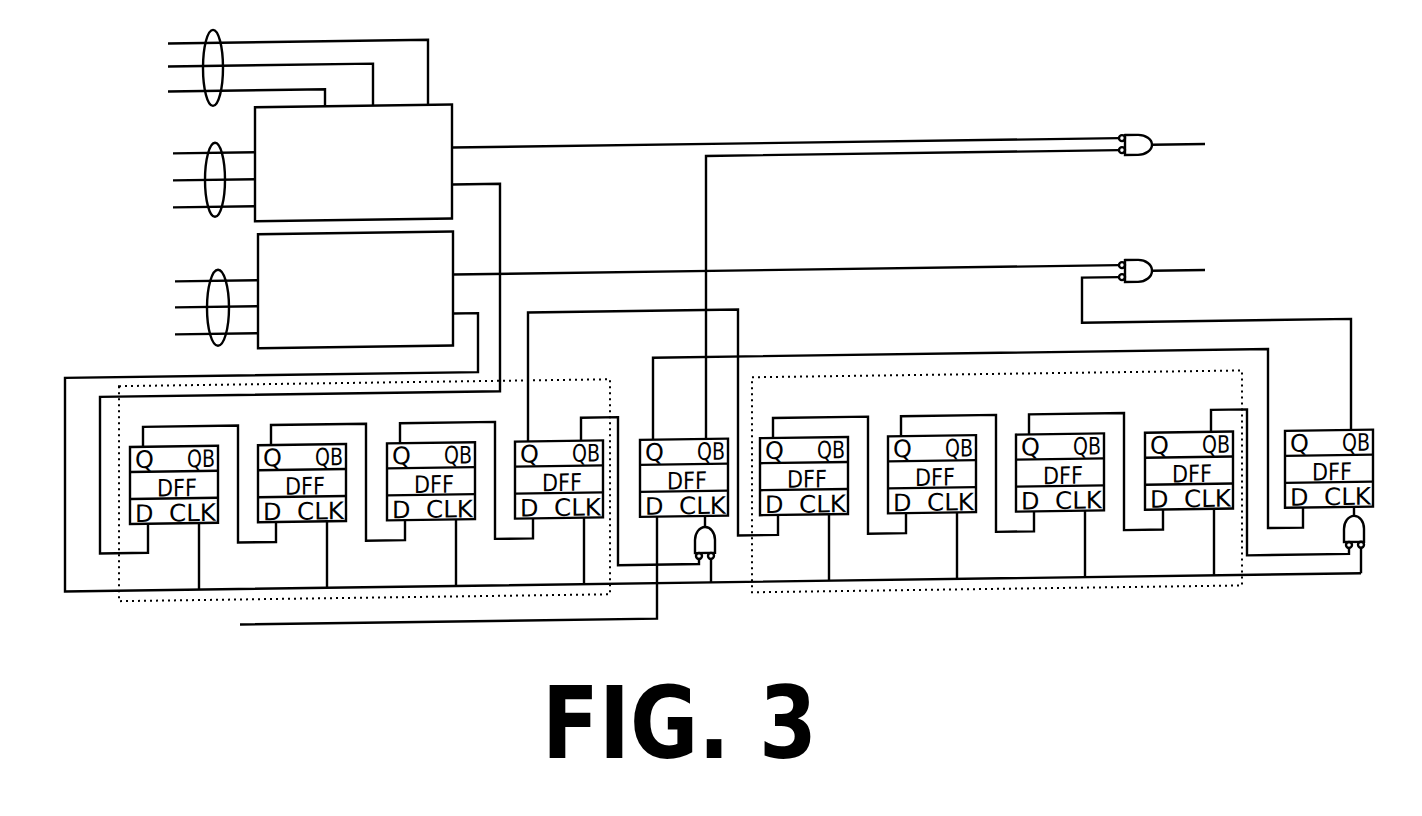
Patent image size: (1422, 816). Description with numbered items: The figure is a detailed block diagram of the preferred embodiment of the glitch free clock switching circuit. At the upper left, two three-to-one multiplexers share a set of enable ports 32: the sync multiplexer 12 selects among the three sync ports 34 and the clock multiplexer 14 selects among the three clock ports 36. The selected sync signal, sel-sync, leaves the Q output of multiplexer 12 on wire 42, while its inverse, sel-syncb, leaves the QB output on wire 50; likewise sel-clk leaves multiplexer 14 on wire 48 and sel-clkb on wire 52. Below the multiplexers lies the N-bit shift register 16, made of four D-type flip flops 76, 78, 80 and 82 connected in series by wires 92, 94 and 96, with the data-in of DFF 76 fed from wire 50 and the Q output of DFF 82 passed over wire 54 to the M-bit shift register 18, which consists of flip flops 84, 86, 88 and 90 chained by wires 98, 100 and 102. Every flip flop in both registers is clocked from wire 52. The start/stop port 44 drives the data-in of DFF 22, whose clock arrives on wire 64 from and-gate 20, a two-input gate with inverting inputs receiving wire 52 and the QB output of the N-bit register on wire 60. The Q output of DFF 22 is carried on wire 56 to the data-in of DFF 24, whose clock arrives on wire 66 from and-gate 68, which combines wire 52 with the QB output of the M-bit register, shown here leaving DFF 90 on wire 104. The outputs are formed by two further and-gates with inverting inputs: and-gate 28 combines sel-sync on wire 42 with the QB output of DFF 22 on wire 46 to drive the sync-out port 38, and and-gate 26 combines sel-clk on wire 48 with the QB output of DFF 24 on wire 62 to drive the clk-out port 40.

The 3:1 MUX 12 is at (447, 136).
The 3:1 MUX 14 is at (262, 257).
The N-bit shift register 16 is at (349, 490).
The M-bit shift register 18 is at (997, 507).
The and-gate 20 is at (695, 548).
The DFF 22 is at (664, 430).
The DFF 24 is at (1329, 432).
The and-gate 26 is at (1133, 274).
The and-gate 28 is at (1132, 147).
The enable ports 32 is at (210, 31).
The sync ports 34 is at (210, 143).
The clock ports 36 is at (213, 346).
The sync-out port 38 is at (1188, 157).
The clk-out port 40 is at (1192, 283).
The wire 42 is at (615, 152).
The start/stop port 44 is at (427, 627).
The wire 46 is at (706, 223).
The wire 48 is at (830, 279).
The wire 50 is at (502, 240).
The wire 52 is at (972, 592).
The wire 54 is at (602, 318).
The wire 56 is at (900, 365).
The wire 60 is at (581, 424).
The wire 62 is at (1078, 311).
The wire 64 is at (749, 543).
The wire 66 is at (1366, 528).
The and-gate 68 is at (1344, 552).
The D-type flip flop 76 is at (174, 515).
The D-type flip flop 78 is at (302, 514).
The D-type flip flop 80 is at (431, 512).
The D-type flip flop 82 is at (559, 507).
The D-type flip flop 84 is at (817, 505).
The D-type flip flop 86 is at (932, 503).
The D-type flip flop 88 is at (1060, 502).
The D-type flip flop 90 is at (1189, 500).
The Q to D connection line 92 is at (204, 426).
The Q to D connection line 94 is at (332, 426).
The Q to D connection line 96 is at (462, 425).
The Q to D connection line 98 is at (828, 424).
The Q to D connection line 100 is at (957, 425).
The Q to D connection line 102 is at (1085, 425).
The QB to gate 68 connection line 104 is at (1213, 425).